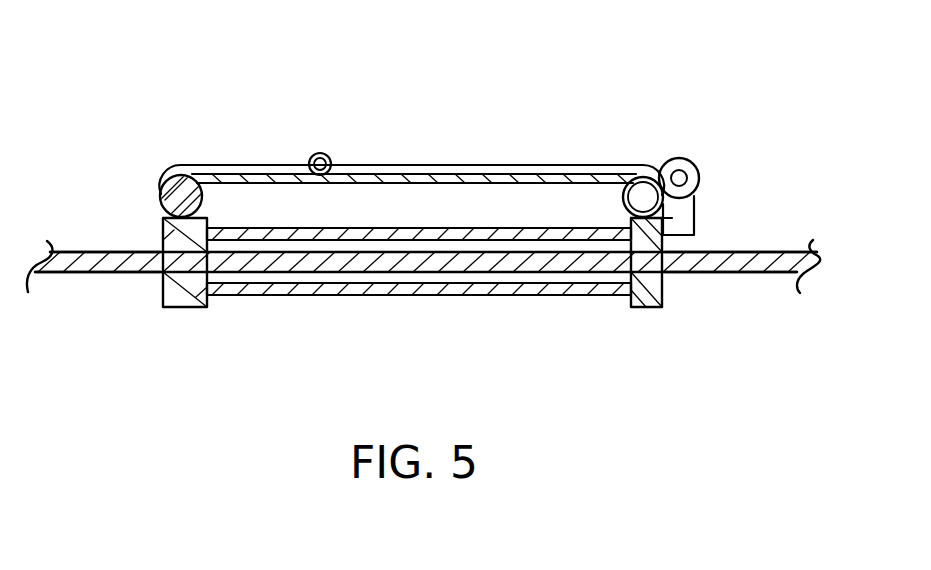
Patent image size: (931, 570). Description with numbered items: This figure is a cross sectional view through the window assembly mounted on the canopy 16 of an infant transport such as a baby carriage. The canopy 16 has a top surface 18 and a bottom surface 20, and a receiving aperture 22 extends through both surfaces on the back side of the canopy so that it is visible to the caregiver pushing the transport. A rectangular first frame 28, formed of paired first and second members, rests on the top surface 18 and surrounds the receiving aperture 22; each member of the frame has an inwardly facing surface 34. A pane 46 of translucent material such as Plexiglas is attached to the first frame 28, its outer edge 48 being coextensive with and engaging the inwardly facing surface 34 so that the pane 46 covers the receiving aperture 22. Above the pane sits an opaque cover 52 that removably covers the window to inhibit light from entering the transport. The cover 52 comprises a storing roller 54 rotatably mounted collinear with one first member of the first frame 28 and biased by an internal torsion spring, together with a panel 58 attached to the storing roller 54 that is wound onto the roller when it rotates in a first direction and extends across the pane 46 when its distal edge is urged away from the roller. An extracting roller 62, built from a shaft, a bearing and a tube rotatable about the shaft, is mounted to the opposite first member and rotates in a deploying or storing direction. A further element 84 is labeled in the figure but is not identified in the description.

The canopy 16 is at (112, 250).
The top surface 18 is at (785, 250).
The bottom surface 20 is at (142, 273).
The receiving aperture 22 is at (633, 250).
The first frame 28 is at (163, 221).
The inwardly facing surface 34 is at (419, 182).
The pane 46 is at (360, 228).
The outer edge 48 is at (695, 233).
The cover 52 is at (466, 123).
The storing roller 54 is at (643, 197).
The panel 58 is at (423, 177).
The extracting roller 62 is at (187, 200).
The belt top surface 84 is at (561, 166).